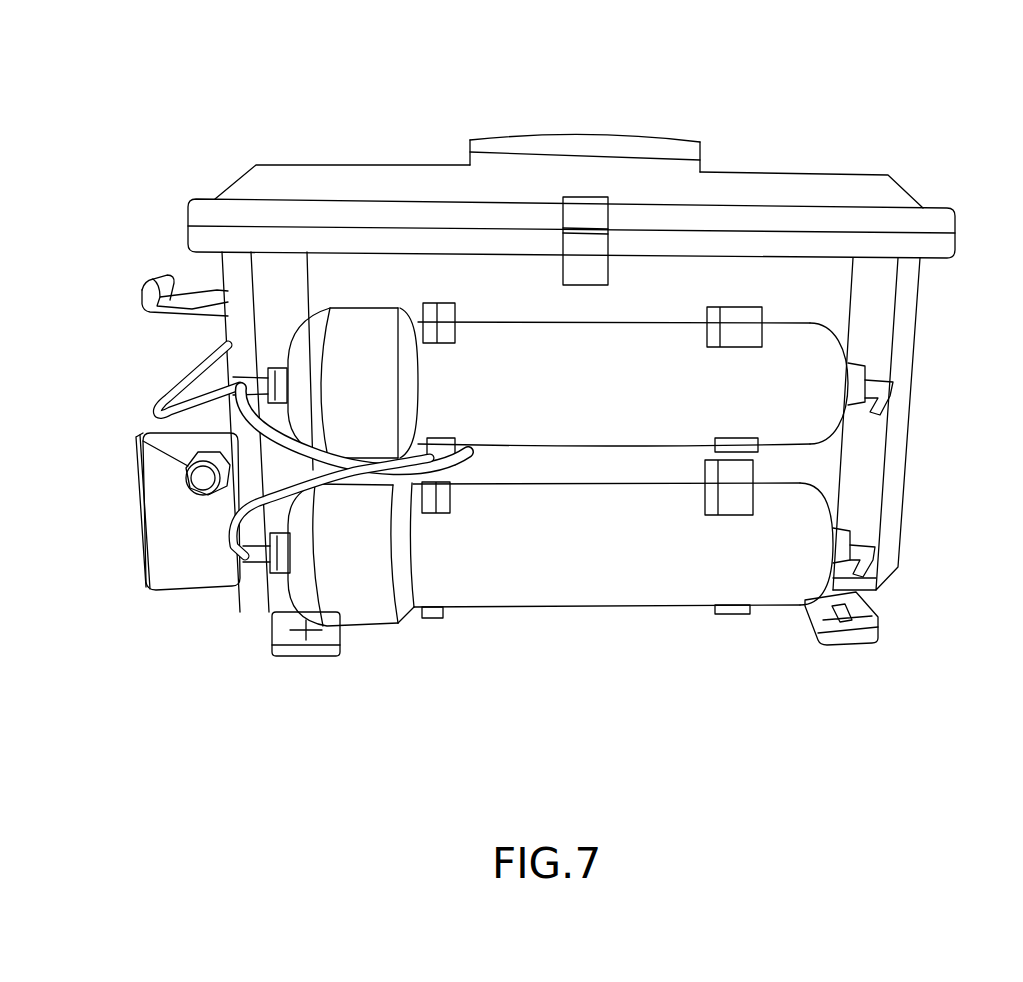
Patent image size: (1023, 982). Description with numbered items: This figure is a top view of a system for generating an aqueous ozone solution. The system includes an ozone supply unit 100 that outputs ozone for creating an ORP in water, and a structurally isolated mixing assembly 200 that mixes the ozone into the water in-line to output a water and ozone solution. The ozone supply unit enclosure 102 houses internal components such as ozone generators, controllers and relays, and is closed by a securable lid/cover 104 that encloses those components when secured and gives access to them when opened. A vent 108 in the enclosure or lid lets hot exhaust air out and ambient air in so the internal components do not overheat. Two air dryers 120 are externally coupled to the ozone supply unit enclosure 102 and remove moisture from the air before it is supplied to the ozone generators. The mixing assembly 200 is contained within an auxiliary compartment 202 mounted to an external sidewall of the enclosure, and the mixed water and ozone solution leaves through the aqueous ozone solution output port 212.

The ozone supply unit 100 is at (166, 80).
The ozone supply unit enclosure 102 is at (905, 352).
The securable lid/cover 104 is at (823, 187).
The vent 108 is at (596, 134).
The air dryer 120 is at (590, 597).
The mixing assembly 200 is at (132, 525).
The auxiliary compartment 202 is at (203, 583).
The aqueous ozone solution output port 212 is at (186, 467).